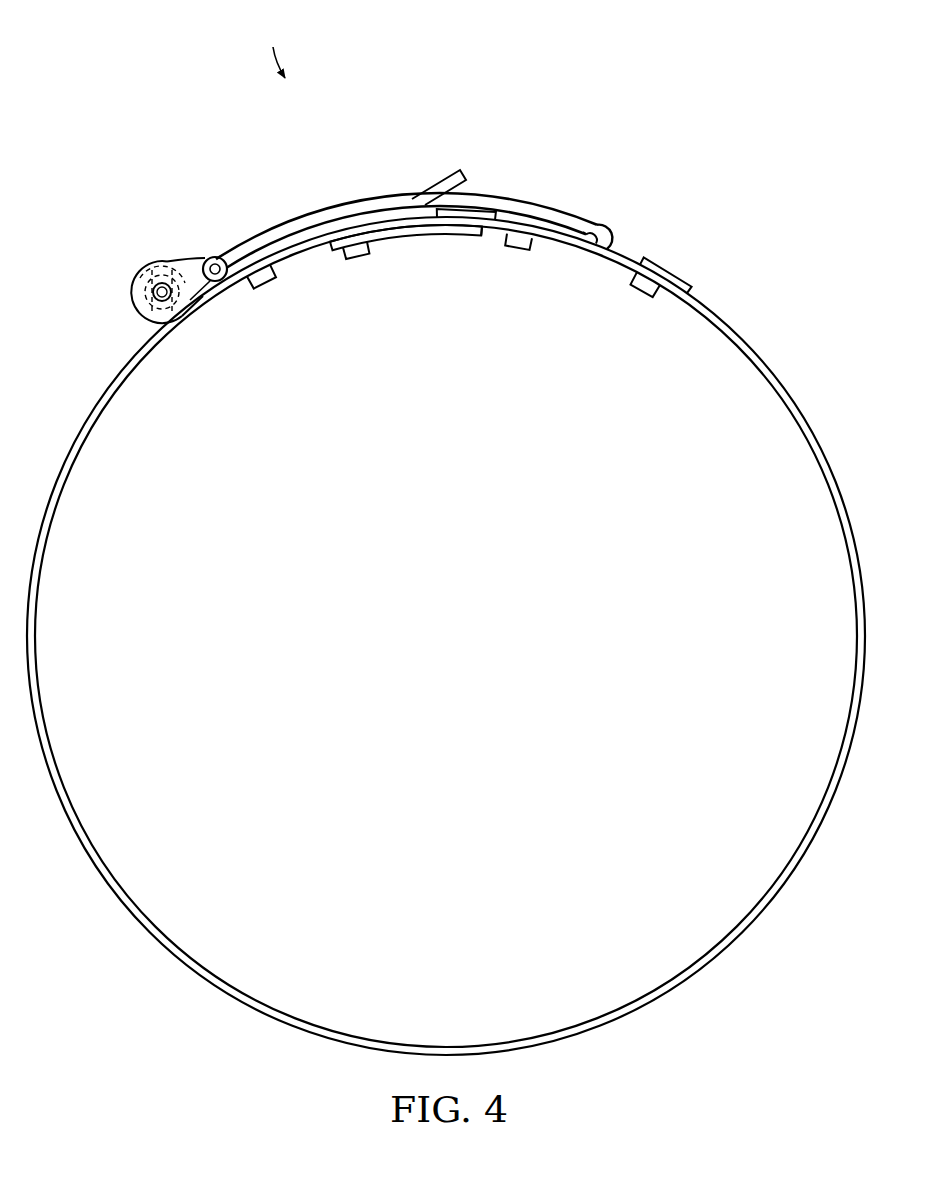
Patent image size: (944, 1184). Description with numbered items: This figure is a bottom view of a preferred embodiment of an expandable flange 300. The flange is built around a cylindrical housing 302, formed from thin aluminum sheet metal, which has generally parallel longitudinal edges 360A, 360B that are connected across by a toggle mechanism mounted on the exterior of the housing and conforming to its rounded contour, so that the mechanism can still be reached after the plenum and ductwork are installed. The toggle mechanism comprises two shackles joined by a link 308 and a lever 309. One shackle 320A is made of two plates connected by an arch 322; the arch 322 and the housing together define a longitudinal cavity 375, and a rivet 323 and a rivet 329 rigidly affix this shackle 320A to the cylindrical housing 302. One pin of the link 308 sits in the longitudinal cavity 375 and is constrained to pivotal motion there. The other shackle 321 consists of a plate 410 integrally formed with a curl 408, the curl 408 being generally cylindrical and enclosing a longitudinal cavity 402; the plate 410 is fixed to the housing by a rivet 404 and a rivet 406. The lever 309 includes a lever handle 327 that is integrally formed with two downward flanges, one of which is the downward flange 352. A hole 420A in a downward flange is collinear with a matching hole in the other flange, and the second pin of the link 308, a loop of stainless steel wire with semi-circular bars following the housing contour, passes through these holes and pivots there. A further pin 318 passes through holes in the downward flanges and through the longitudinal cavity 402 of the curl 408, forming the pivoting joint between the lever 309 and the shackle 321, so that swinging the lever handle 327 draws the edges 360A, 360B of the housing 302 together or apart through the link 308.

The expandable flange 300 is at (266, 43).
The cylindrical housing 302 is at (762, 321).
The link 308 is at (525, 200).
The lever 309 is at (189, 252).
The pin 318 is at (156, 295).
The shackle 320A is at (658, 226).
The shackle 321 is at (146, 326).
The arch 322 is at (602, 221).
The rivet 323 is at (522, 249).
The lever handle 327 is at (452, 186).
The rivet 329 is at (643, 297).
The downward flange 352 is at (197, 288).
The longitudinal edge 360A is at (481, 240).
The longitudinal edge 360B is at (445, 220).
The longitudinal cavity 375 is at (594, 252).
The longitudinal cavity 402 is at (150, 268).
The rivet 404 is at (263, 290).
The rivet 406 is at (356, 261).
The curl 408 is at (137, 269).
The plate 410 is at (397, 232).
The hole 420A is at (212, 258).